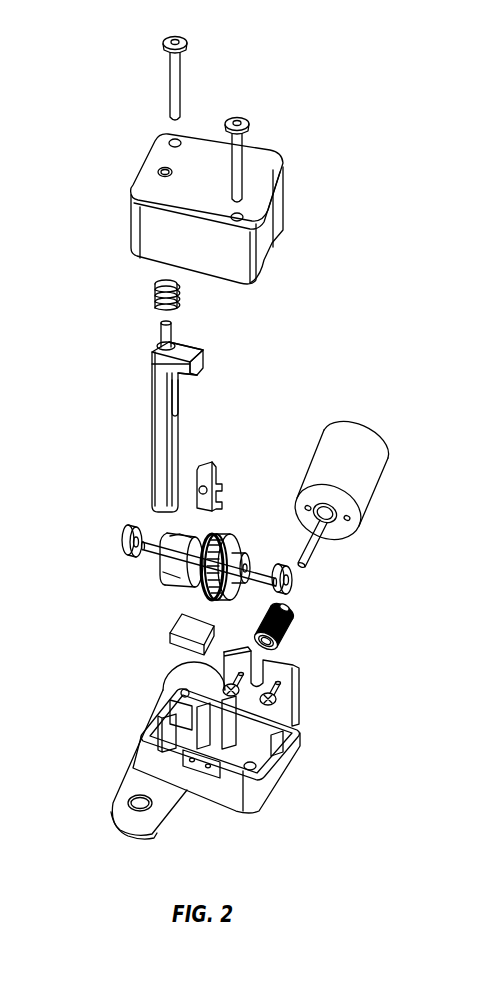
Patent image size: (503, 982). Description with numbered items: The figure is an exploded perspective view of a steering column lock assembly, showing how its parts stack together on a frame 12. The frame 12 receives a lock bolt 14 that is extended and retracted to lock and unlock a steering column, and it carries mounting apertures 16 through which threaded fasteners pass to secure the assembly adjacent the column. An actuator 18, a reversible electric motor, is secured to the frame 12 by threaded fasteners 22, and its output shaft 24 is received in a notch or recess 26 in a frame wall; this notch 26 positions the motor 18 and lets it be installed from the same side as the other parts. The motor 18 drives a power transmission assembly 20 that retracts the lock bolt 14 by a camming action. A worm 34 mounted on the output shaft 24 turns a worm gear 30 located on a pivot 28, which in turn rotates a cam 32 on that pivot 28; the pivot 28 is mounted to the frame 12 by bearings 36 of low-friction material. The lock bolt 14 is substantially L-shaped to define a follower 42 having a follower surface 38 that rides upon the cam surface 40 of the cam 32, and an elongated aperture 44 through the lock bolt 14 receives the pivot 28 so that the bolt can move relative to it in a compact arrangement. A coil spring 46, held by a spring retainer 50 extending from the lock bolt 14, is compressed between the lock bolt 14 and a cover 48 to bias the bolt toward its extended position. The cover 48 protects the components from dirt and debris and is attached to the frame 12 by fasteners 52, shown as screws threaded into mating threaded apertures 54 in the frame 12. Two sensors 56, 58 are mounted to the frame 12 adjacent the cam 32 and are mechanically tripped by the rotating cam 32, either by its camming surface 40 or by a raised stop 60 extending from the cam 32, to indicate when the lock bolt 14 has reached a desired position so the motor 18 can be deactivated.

The frame 12 is at (183, 772).
The lock bolt 14 is at (174, 427).
The apertures 16 is at (140, 812).
The actuator 18 is at (388, 443).
The power transmission assembly 20 is at (99, 520).
The threaded fasteners 22 is at (272, 700).
The output shaft 24 is at (310, 557).
The notch or recess 26 is at (293, 663).
The pivot 28 is at (152, 555).
The worm gear 30 is at (233, 532).
The cam 32 is at (148, 560).
The worm 34 is at (286, 614).
The bearings 36 is at (120, 550).
The follower surface 38 is at (188, 374).
The cam surface 40 is at (183, 543).
The follower 42 is at (187, 367).
The aperture 44 is at (178, 393).
The spring 46 is at (157, 307).
The cover 48 is at (283, 163).
The spring retainer 50 is at (160, 335).
The fasteners 52 is at (180, 82).
The threaded apertures 54 is at (150, 735).
The sensor 56 is at (178, 650).
The sensor 58 is at (212, 467).
The stop 60 is at (163, 575).